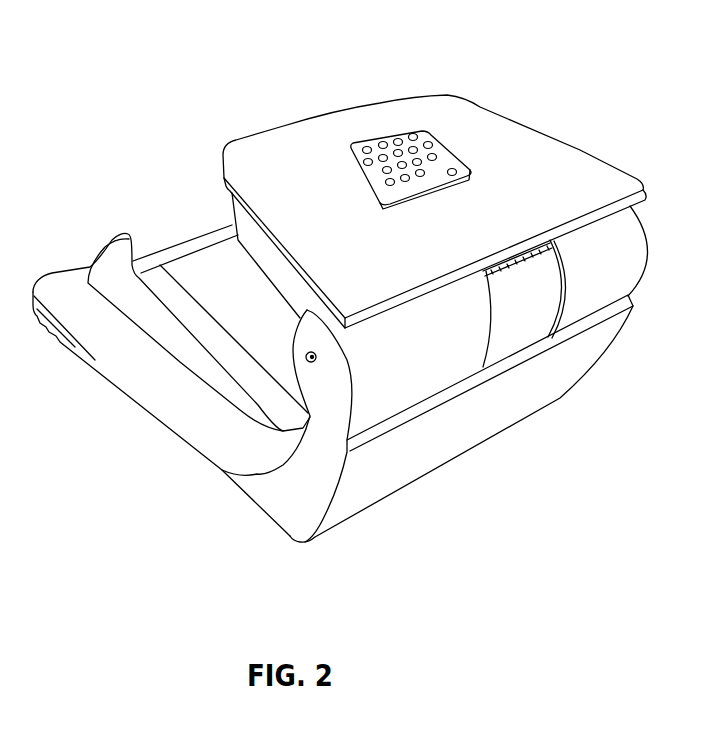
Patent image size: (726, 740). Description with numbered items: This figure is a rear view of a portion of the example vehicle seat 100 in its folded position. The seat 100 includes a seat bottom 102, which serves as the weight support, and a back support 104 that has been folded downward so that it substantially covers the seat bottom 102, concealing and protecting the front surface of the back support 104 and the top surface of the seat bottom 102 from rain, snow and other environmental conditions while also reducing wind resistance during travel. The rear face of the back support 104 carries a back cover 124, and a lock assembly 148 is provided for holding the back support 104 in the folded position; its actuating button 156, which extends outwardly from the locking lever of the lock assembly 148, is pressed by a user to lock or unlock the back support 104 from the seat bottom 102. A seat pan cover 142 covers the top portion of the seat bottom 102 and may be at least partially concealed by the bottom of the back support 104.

The vehicle seat 100 is at (374, 278).
The seat bottom 102 is at (140, 383).
The back support 104 is at (434, 192).
The back cover 124 is at (522, 159).
The seat pan cover 142 is at (630, 249).
The lock assembly 148 is at (385, 123).
The actuating button 156 is at (388, 133).